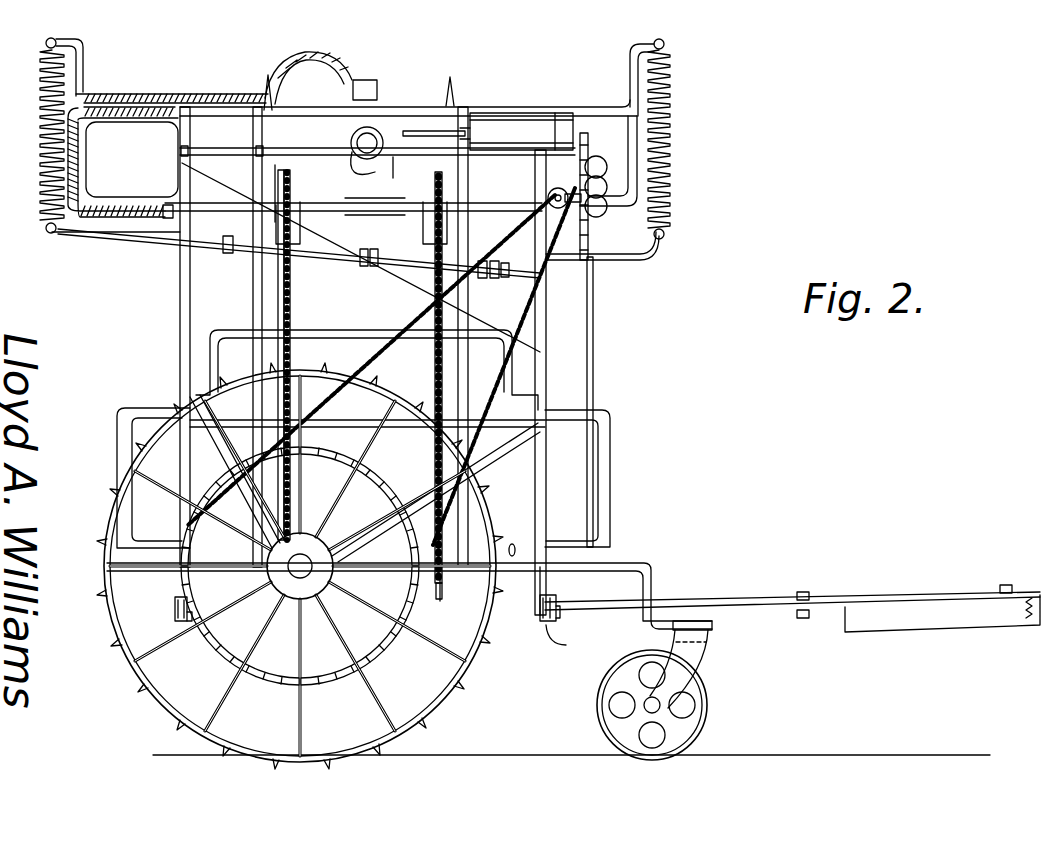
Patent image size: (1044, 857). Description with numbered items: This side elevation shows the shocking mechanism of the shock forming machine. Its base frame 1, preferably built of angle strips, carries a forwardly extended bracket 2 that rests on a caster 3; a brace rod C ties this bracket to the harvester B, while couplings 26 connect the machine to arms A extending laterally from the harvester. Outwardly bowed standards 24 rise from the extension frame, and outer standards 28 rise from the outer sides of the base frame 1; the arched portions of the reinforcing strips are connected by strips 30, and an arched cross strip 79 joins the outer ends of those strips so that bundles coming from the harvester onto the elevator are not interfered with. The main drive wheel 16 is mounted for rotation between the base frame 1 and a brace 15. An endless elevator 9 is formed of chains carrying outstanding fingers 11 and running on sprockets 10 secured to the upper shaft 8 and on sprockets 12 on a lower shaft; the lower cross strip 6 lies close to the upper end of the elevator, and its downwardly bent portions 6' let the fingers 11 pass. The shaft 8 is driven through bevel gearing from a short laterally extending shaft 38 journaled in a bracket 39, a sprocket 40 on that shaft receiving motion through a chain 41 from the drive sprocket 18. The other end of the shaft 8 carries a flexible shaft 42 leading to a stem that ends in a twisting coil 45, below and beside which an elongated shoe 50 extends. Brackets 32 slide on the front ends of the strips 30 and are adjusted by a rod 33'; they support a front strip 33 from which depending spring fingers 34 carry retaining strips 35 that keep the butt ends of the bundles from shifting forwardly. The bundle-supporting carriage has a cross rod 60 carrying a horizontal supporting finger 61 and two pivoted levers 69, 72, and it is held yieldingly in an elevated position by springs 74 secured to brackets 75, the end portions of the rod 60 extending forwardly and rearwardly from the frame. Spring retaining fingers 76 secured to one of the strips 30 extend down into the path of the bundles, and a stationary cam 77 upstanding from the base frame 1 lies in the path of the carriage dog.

The base frame 1 is at (537, 600).
The bracket 2 is at (652, 582).
The caster 3 is at (700, 672).
The lower cross strip 6 is at (353, 194).
The downwardly bent portions 6' is at (361, 223).
The upper shaft 8 is at (178, 252).
The endless elevator 9 is at (290, 298).
The sprockets 10 is at (284, 198).
The outstanding fingers 11 is at (278, 170).
The sprockets 12 is at (335, 574).
The brace 15 is at (213, 480).
The main drive wheel 16 is at (452, 680).
The drive sprocket 18 is at (438, 600).
The outwardly bowed standards 24 is at (117, 430).
The couplings 26 is at (175, 609).
The outer standards 28 is at (180, 323).
The strips 30 is at (405, 128).
The brackets 32 is at (505, 120).
The front strip 33 is at (600, 191).
The rod 33' is at (474, 86).
The spring fingers 34 is at (603, 212).
The retaining strips 35 is at (594, 412).
The short laterally extending shaft 38 is at (520, 226).
The bracket 39 is at (570, 228).
The sprocket 40 is at (557, 190).
The chain 41 is at (420, 378).
The flexible shaft 42 is at (300, 56).
The twisting coil 45 is at (372, 128).
The elongated shoe 50 is at (372, 214).
The cross rod 60 is at (578, 264).
The supporting finger 61 is at (229, 254).
The supporting lever 69 is at (486, 280).
The lever 72 is at (366, 268).
The springs 74 is at (42, 128).
The brackets 75 is at (82, 78).
The spring retaining fingers 76 is at (265, 92).
The stationary cam 77 is at (513, 543).
The arched cross strip 79 is at (316, 334).
The arms A is at (592, 657).
The harvester B is at (1000, 630).
The brace rod C is at (838, 628).